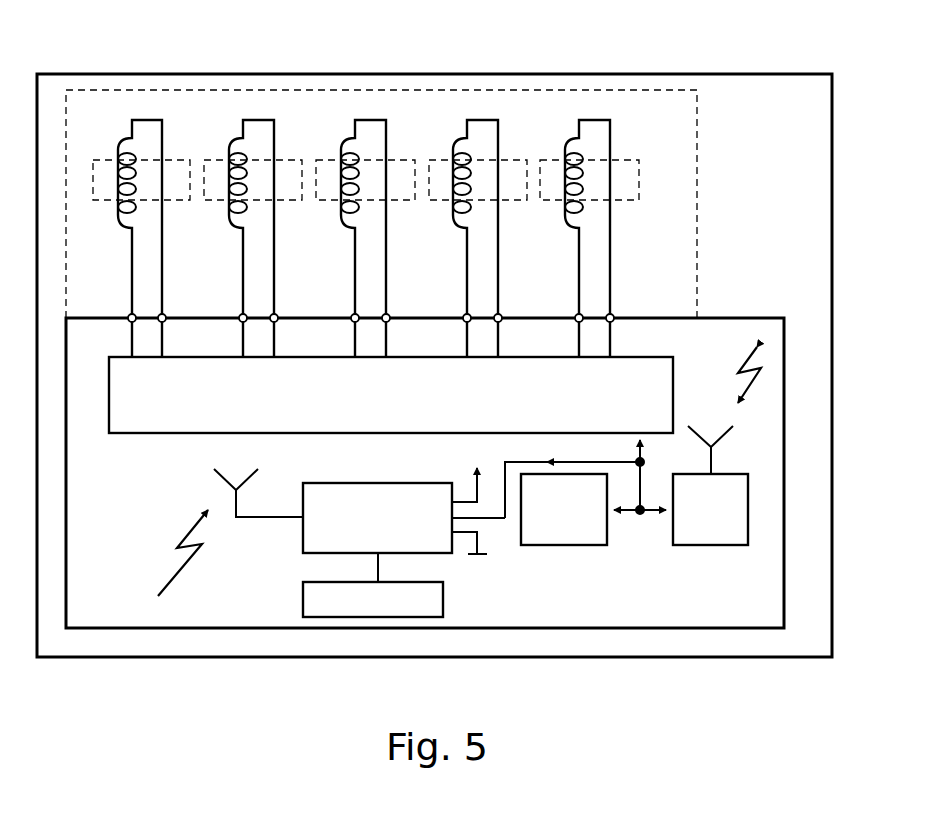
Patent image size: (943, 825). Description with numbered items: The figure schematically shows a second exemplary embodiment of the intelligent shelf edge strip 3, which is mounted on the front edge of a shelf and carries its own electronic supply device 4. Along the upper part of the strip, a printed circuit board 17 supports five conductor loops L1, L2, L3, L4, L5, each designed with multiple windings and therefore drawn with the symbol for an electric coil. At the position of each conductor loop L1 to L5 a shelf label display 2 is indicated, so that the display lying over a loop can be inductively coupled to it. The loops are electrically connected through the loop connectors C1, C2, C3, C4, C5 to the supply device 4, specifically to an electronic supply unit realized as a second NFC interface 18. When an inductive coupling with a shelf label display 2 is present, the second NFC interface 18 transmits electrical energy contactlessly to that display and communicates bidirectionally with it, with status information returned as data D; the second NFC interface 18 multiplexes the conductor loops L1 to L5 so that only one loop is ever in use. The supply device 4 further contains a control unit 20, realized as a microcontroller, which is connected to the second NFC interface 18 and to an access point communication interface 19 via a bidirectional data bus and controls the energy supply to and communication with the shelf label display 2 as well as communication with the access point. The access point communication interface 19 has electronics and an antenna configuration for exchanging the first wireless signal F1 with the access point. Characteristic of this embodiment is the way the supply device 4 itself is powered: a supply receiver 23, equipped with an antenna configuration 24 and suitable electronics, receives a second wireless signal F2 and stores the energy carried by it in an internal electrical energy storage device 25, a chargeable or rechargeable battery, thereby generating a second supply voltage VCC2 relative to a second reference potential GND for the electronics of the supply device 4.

The shelf edge strip 3 is at (786, 70).
The printed circuit board 17 is at (698, 128).
The supply device 4 is at (746, 314).
The shelf label display 2 is at (116, 158).
The conductor loop L1 is at (118, 222).
The conductor loop L2 is at (229, 222).
The conductor loop L3 is at (341, 222).
The conductor loop L4 is at (453, 222).
The conductor loop L5 is at (565, 222).
The loop connector C1 is at (129, 314).
The loop connector C2 is at (240, 314).
The loop connector C3 is at (352, 314).
The loop connector C4 is at (464, 314).
The loop connector C5 is at (576, 314).
The second NFC interface 18 is at (636, 364).
The data D is at (643, 480).
The supply receiver 23 is at (377, 498).
The second supply voltage VCC2 is at (467, 463).
The second reference potential GND is at (477, 572).
The electrical energy storage device 25 is at (440, 604).
The antenna configuration 24 is at (240, 505).
The second wireless signal F2 is at (190, 562).
The control unit 20 is at (565, 540).
The access point communication interface 19 is at (712, 535).
The first wireless signal F1 is at (740, 392).